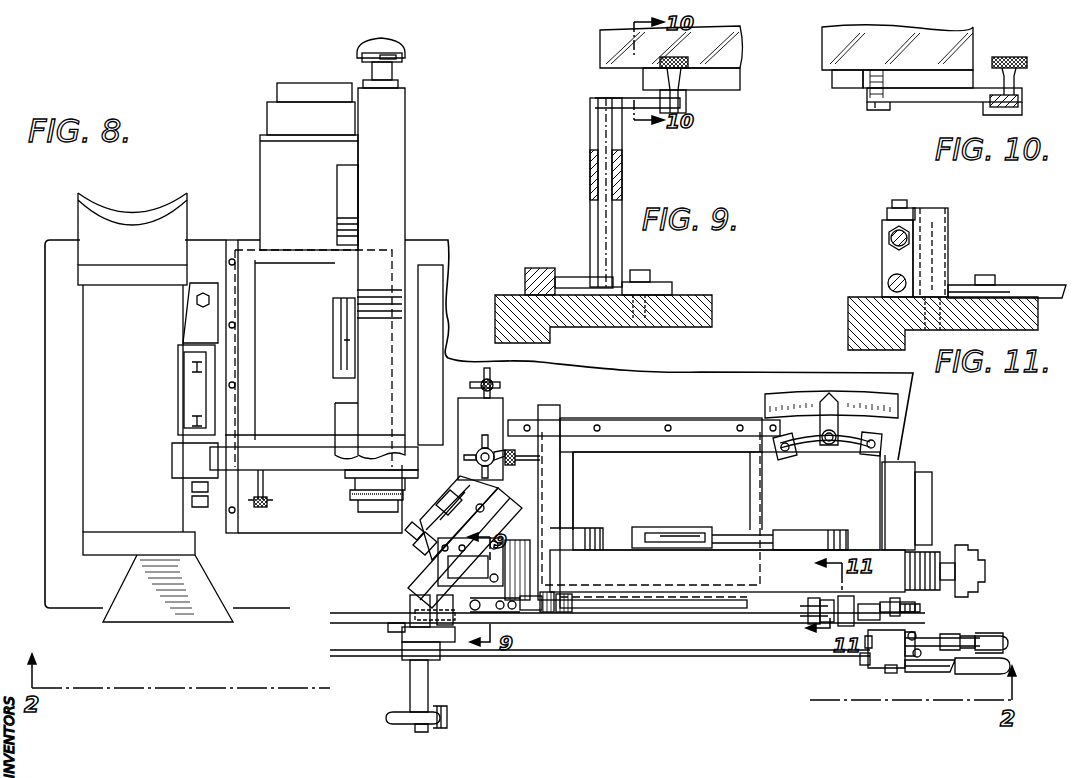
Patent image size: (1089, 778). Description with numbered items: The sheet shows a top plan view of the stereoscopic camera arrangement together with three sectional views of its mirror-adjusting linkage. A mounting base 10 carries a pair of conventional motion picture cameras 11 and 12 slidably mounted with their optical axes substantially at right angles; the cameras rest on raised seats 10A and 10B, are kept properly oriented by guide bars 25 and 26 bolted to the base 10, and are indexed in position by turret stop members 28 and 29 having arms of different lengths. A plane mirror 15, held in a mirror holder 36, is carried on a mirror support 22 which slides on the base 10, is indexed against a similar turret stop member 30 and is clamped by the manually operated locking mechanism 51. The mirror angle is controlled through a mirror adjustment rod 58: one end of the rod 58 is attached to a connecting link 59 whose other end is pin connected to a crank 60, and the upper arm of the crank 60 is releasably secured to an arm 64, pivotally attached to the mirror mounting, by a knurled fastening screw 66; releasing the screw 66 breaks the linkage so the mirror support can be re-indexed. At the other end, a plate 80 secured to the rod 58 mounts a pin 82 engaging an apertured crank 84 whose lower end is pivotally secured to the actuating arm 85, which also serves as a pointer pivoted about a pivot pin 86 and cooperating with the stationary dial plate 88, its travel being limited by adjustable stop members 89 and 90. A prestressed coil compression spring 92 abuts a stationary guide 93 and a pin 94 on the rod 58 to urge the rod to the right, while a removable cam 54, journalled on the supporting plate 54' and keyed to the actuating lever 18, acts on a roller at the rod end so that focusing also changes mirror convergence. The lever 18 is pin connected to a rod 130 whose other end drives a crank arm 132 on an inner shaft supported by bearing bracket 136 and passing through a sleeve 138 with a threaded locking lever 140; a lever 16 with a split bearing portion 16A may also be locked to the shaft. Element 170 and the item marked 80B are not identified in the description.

In FIG. 8, the mounting base 10 is at (50, 386).
In FIG. 9, the mounting base 10 is at (700, 304).
In FIG. 11, the mounting base 10 is at (1030, 320).
In FIG. 8, the column 170 is at (76, 453).
In FIG. 8, the guide bar 26 is at (233, 246).
In FIG. 8, the raised seat 10B is at (272, 528).
In FIG. 8, the turret stop member 29 is at (275, 506).
In FIG. 8, the motion picture camera 11 is at (258, 172).
In FIG. 8, the mirror support 22 is at (502, 396).
In FIG. 8, the turret stop member 30 is at (476, 380).
In FIG. 8, the locking mechanism 51 is at (472, 446).
In FIG. 8, the turret stop member 28 is at (514, 470).
In FIG. 8, the raised seat 10A is at (511, 418).
In FIG. 8, the guide bar 25 is at (699, 420).
In FIG. 8, the motion picture camera 12 is at (934, 472).
In FIG. 8, the dial plate 88 is at (898, 405).
In FIG. 8, the actuating arm 85 is at (829, 445).
In FIG. 11, the actuating arm 85 is at (1036, 286).
In FIG. 8, the adjustable stop member 90 is at (882, 440).
In FIG. 8, the adjustable stop member 89 is at (784, 447).
In FIG. 8, the plane mirror 15 is at (408, 576).
In FIG. 9, the plane mirror 15 is at (596, 49).
In FIG. 10, the plane mirror 15 is at (980, 36).
In FIG. 8, the arm 64 is at (455, 556).
In FIG. 9, the arm 64 is at (625, 98).
In FIG. 10, the arm 64 is at (930, 102).
In FIG. 8, the bearing bracket 136 is at (402, 640).
In FIG. 8, the crank arm 132 is at (404, 655).
In FIG. 8, the sleeve 138 is at (428, 690).
In FIG. 8, the locking lever 140 is at (396, 722).
In FIG. 8, the supporting plate 54' is at (653, 620).
In FIG. 8, the mirror adjustment rod 58 is at (764, 625).
In FIG. 11, the mirror adjustment rod 58 is at (886, 283).
In FIG. 8, the rod 130 is at (748, 658).
In FIG. 8, the cam 54 is at (886, 611).
In FIG. 8, the crank 84 is at (814, 600).
In FIG. 11, the crank 84 is at (887, 214).
In FIG. 8, the block 80B is at (885, 650).
In FIG. 8, the split bearing portion 16A is at (898, 660).
In FIG. 8, the lever 16 is at (992, 658).
In FIG. 8, the actuating lever 18 is at (990, 674).
In FIG. 8, the crank 60 is at (449, 625).
In FIG. 9, the crank 60 is at (570, 277).
In FIG. 10, the crank 60 is at (1022, 106).
In FIG. 8, the connecting link 59 is at (505, 608).
In FIG. 9, the connecting link 59 is at (530, 268).
In FIG. 8, the stationary guide 93 is at (548, 610).
In FIG. 8, the coil compression spring 92 is at (575, 608).
In FIG. 8, the pin 94 is at (580, 598).
In FIG. 9, the mirror holder 36 is at (740, 77).
In FIG. 10, the mirror holder 36 is at (845, 88).
In FIG. 9, the knurled fastening screw 66 is at (676, 77).
In FIG. 10, the knurled fastening screw 66 is at (1012, 82).
In FIG. 11, the plate 80 is at (882, 257).
In FIG. 11, the pin 82 is at (898, 200).
In FIG. 11, the pivot pin 86 is at (988, 275).